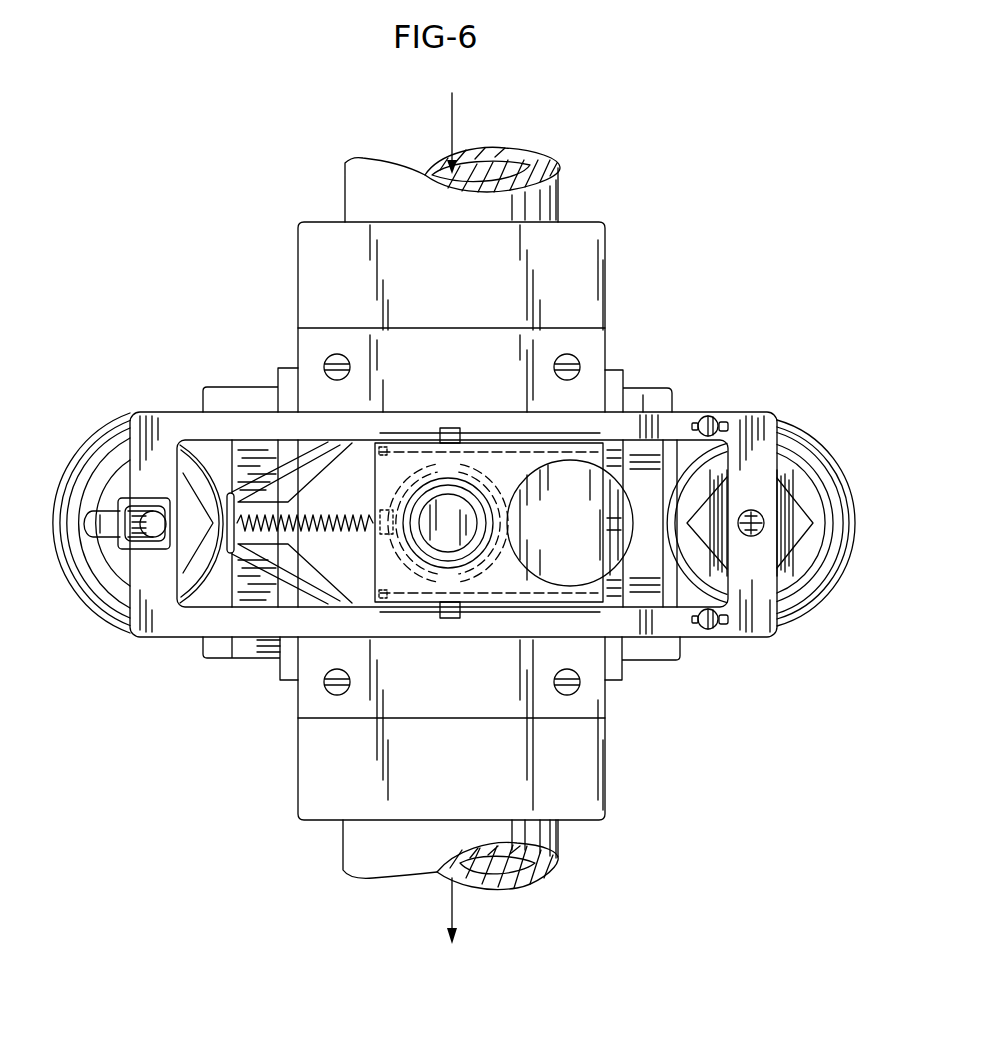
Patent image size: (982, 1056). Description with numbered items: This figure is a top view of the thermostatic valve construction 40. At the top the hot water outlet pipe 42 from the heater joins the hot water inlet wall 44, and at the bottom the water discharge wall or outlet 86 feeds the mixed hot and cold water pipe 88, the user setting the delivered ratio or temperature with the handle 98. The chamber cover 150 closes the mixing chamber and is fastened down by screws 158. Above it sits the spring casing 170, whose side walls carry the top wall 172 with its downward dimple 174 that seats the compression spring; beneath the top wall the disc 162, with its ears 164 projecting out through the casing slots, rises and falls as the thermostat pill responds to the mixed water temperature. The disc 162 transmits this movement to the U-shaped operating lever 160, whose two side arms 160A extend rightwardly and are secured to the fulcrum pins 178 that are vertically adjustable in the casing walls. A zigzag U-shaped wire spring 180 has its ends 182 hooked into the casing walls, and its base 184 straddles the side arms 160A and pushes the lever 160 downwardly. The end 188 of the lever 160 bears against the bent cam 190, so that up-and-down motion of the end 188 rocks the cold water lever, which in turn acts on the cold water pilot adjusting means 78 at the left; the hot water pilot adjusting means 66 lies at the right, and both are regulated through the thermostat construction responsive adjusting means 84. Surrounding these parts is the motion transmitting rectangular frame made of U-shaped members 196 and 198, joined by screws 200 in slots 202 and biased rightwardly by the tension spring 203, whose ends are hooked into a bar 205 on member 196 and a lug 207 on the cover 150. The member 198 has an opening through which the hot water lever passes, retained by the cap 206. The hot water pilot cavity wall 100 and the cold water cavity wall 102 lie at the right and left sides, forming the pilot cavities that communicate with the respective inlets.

The valve construction 40 is at (142, 303).
The hot water outlet pipe 42 is at (560, 188).
The hot water inlet wall 44 is at (300, 258).
The hot water pilot adjusting means 66 is at (760, 484).
The cold water pilot adjusting means 78 is at (94, 490).
The thermostat construction responsive adjusting means 84 is at (290, 618).
The water discharge wall or outlet 86 is at (592, 782).
The mixed hot and cold water pipe 88 is at (560, 852).
The handle 98 is at (572, 535).
The hot water pilot cavity wall 100 is at (655, 661).
The cold water cavity wall 102 is at (237, 662).
The chamber cover 150 is at (424, 347).
The screws 158 is at (326, 365).
The operating lever 160 is at (150, 552).
The side arms 160A is at (287, 460).
The disc 162 is at (397, 550).
The ears 164 is at (450, 428).
The spring casing 170 is at (538, 441).
The top wall 172 is at (512, 582).
The downward dimple 174 is at (420, 505).
The fulcrum pins 178 is at (530, 446).
The U-shaped wire spring 180 is at (290, 453).
The ends 182 is at (383, 443).
The base 184 is at (228, 532).
The end 188 is at (123, 531).
The bent cam 190 is at (103, 517).
The U-shaped member 196 is at (183, 413).
The U-shaped member 198 is at (757, 412).
The screws 200 is at (698, 418).
The slots 202 is at (718, 418).
The tension spring 203 is at (316, 527).
The bar 205 is at (233, 453).
The cap 206 is at (763, 537).
The lug 207 is at (387, 517).